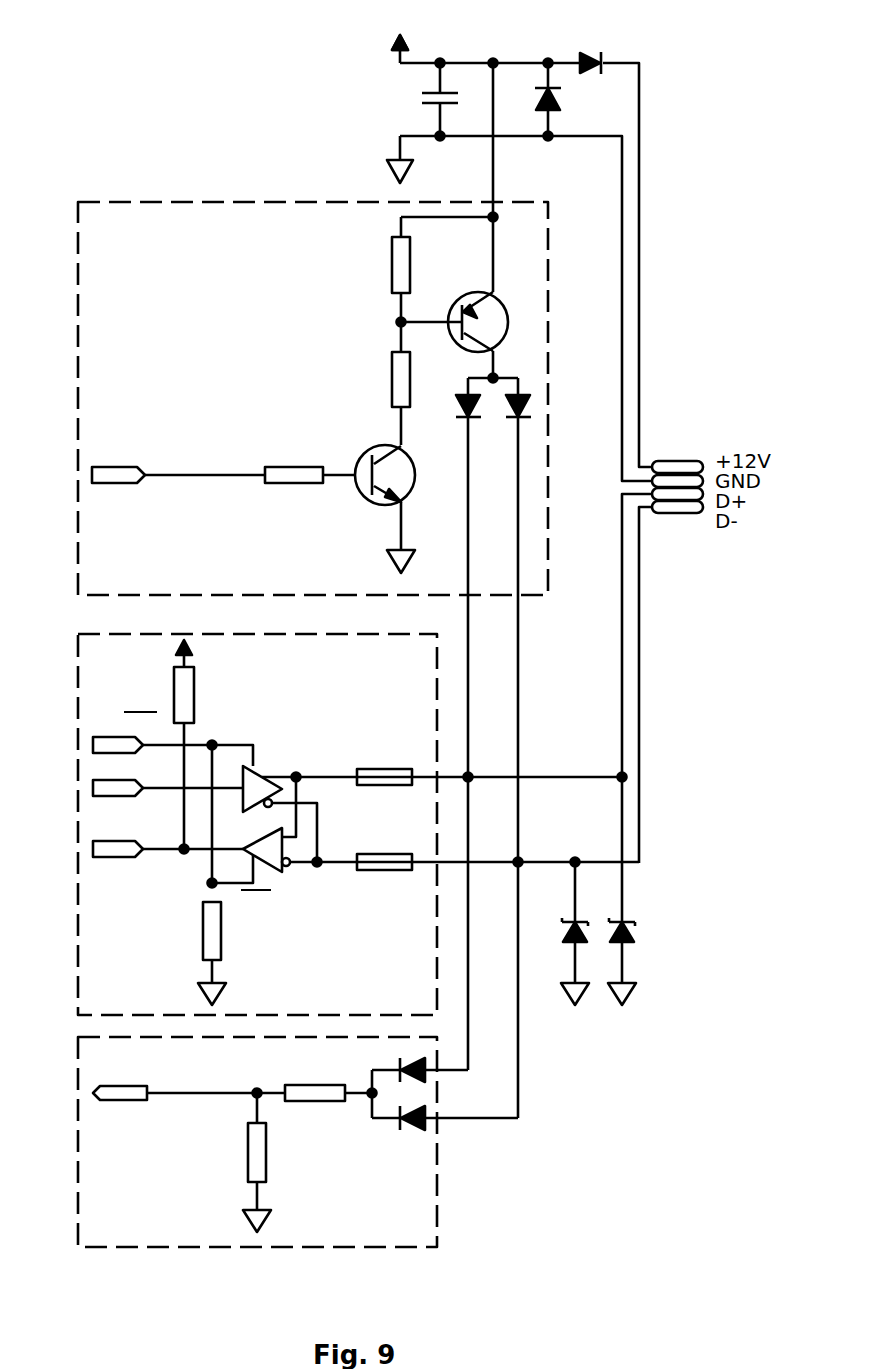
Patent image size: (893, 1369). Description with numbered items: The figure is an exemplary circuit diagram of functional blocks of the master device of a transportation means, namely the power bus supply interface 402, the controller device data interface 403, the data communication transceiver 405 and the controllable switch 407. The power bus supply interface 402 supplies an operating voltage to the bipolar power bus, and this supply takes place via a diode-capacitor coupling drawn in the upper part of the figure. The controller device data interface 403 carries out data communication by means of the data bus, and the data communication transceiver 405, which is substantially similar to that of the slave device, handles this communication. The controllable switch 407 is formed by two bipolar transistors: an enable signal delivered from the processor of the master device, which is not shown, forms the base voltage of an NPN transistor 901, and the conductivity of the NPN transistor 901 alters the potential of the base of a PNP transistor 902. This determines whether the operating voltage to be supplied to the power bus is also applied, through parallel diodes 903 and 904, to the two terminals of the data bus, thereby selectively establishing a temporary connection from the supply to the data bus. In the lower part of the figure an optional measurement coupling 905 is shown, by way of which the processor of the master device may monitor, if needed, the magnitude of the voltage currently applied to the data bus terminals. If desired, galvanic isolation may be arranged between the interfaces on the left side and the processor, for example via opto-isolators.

The controllable switch 407 is at (169, 202).
The PNP transistor 902 is at (478, 296).
The NPN transistor 901 is at (363, 455).
The diode 903 is at (459, 405).
The diode 904 is at (531, 411).
The power bus supply interface 402 is at (673, 467).
The controller device data interface 403 is at (690, 502).
The data communication transceiver 405 is at (78, 634).
The measurement coupling 905 is at (78, 1037).